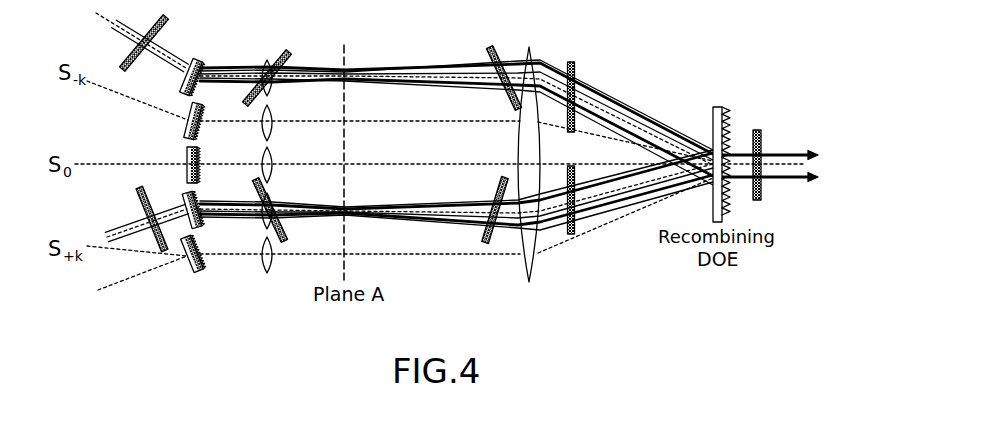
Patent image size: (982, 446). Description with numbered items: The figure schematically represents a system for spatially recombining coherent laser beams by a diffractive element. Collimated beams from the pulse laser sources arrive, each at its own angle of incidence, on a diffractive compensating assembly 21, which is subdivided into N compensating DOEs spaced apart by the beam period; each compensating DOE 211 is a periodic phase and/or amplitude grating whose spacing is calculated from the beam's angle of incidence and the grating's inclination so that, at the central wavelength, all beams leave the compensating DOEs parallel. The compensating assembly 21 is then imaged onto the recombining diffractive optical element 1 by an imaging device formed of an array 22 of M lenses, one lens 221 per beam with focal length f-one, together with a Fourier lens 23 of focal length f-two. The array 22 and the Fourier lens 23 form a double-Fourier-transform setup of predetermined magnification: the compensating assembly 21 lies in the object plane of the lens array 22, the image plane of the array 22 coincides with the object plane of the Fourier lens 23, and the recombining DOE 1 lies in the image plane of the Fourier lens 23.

The recombining diffractive optical element 1 is at (719, 106).
The diffractive compensating assembly 21 is at (162, 190).
The compensating DOE 211 is at (184, 126).
The array of lenses 22 is at (288, 145).
The lens 221 is at (277, 126).
The Fourier lens 23 is at (530, 283).